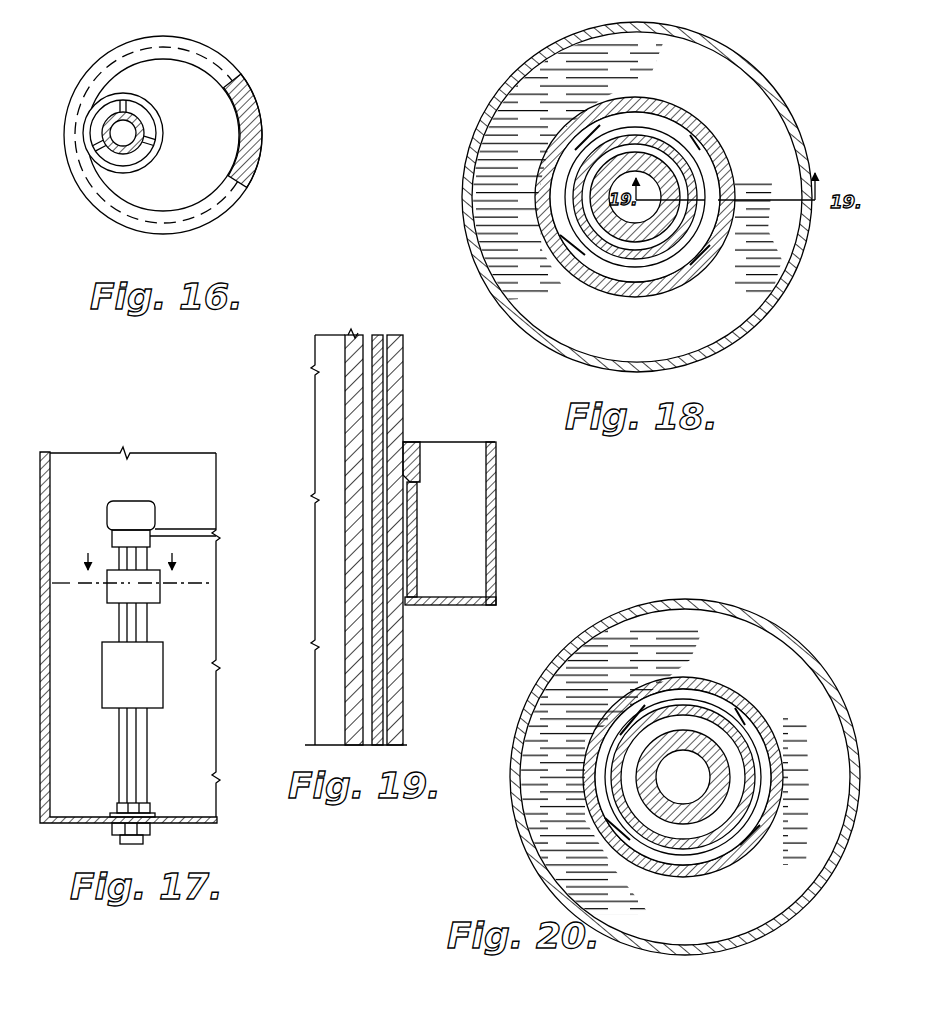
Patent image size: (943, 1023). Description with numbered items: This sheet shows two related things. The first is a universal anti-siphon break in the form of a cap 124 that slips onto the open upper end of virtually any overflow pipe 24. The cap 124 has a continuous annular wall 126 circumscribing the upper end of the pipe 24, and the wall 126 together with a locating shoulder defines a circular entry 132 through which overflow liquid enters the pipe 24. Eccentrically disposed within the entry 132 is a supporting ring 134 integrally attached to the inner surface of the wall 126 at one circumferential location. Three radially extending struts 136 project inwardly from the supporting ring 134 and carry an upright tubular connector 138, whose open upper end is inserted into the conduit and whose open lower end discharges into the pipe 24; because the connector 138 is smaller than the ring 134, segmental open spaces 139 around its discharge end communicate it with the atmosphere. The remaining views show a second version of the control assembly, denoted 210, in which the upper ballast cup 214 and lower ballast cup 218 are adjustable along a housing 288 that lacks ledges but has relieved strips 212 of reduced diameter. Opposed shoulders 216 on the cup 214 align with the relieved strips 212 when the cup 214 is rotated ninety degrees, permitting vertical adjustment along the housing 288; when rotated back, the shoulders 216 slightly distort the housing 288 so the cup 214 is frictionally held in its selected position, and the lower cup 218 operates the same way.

In FIG. 16, the cap 124 is at (190, 33).
In FIG. 16, the annular wall 126 is at (253, 170).
In FIG. 16, the circular entry 132 is at (210, 90).
In FIG. 16, the overflow pipe 24 is at (245, 133).
In FIG. 16, the supporting ring 134 is at (142, 154).
In FIG. 16, the radially extending struts 136 is at (138, 163).
In FIG. 16, the tubular connector 138 is at (140, 103).
In FIG. 16, the hub 139 is at (150, 127).
In FIG. 17, the assembly 210 is at (154, 645).
In FIG. 17, the upper ballast cup 214 is at (102, 597).
In FIG. 18, the upper ballast cup 214 is at (738, 55).
In FIG. 19, the upper ballast cup 214 is at (498, 520).
In FIG. 20, the upper ballast cup 214 is at (766, 610).
In FIG. 17, the lower ballast cup 218 is at (100, 697).
In FIG. 17, the housing 288 is at (152, 738).
In FIG. 18, the housing 288 is at (653, 294).
In FIG. 19, the housing 288 is at (405, 665).
In FIG. 20, the housing 288 is at (747, 853).
In FIG. 17, the relieved strips 212 is at (164, 675).
In FIG. 18, the relieved strips 212 is at (631, 110).
In FIG. 20, the relieved strips 212 is at (717, 693).
In FIG. 18, the shoulders 216 is at (727, 183).
In FIG. 19, the shoulders 216 is at (408, 442).
In FIG. 20, the shoulders 216 is at (663, 690).